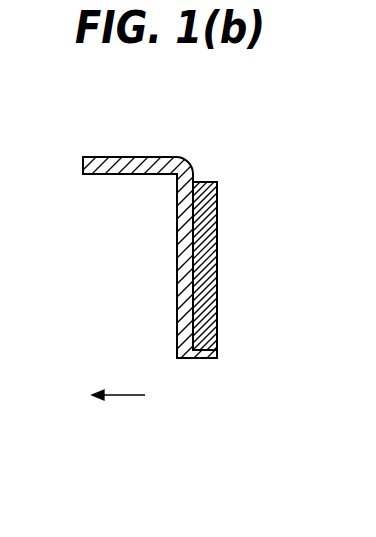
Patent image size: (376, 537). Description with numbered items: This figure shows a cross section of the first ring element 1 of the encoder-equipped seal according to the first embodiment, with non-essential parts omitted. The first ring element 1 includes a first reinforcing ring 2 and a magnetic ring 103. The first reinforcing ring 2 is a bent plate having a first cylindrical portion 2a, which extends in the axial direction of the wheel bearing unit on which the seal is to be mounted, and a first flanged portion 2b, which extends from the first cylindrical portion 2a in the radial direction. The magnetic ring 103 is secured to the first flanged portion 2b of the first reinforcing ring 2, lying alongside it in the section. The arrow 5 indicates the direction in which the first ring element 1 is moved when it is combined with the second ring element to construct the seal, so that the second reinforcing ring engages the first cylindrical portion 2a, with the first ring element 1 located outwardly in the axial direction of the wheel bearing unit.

The first ring element 1 is at (188, 272).
The first reinforcing ring 2 is at (188, 257).
The first cylindrical portion 2a is at (123, 168).
The first flanged portion 2b is at (183, 263).
The magnetic ring 103 is at (218, 360).
The arrow 5 is at (132, 397).